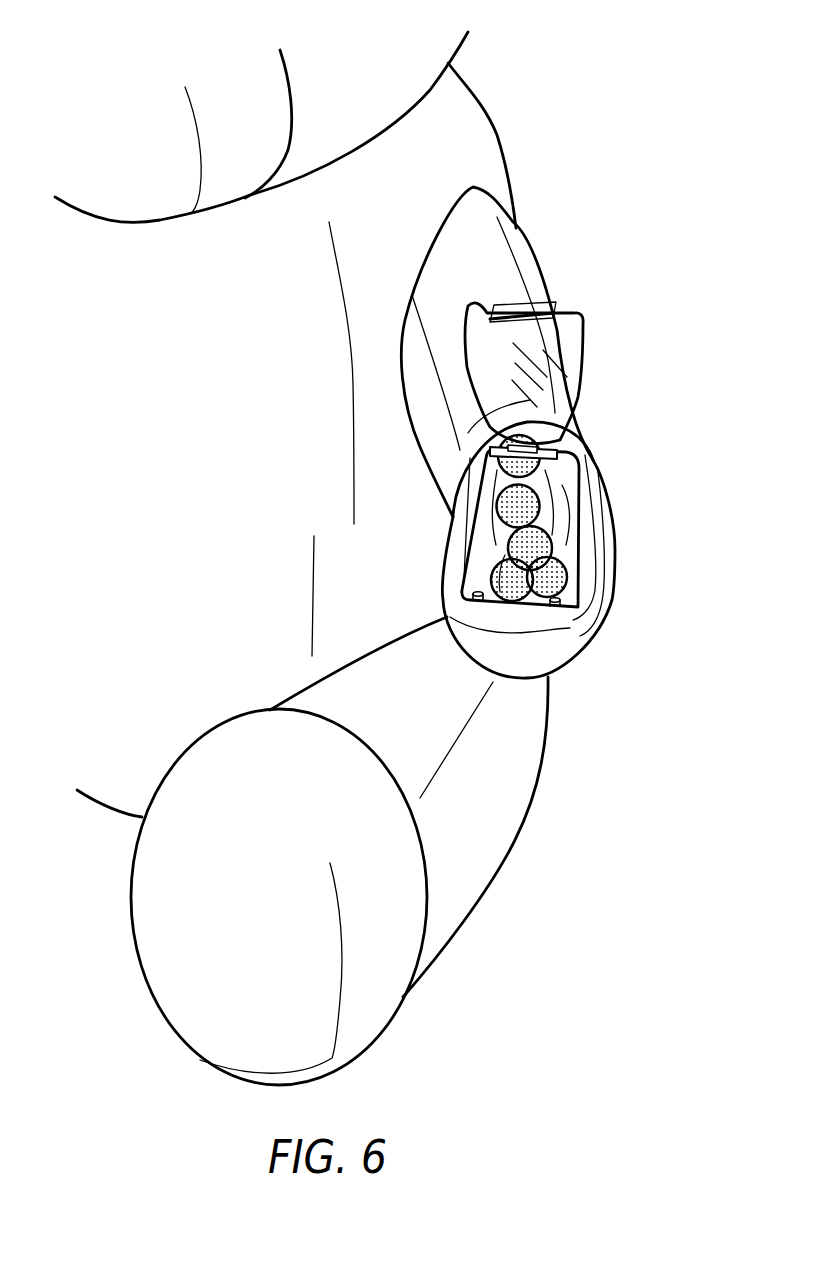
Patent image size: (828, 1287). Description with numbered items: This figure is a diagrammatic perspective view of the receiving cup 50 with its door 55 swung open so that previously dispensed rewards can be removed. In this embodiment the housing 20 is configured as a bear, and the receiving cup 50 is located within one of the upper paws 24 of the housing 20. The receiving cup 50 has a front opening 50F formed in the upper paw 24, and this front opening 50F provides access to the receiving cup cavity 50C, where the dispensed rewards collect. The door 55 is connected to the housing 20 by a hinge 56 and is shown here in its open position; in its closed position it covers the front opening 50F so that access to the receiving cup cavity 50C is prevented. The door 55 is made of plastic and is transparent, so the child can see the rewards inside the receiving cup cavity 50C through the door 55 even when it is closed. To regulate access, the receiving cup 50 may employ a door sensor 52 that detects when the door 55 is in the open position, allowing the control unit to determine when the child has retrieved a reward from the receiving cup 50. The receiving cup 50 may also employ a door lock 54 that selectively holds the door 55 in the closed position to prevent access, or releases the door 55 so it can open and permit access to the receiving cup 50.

The housing 20 is at (500, 148).
The upper paw 24 is at (597, 637).
The door 55 is at (583, 362).
The receiving cup 50 is at (585, 528).
The receiving cup cavity 50C is at (563, 498).
The front opening 50F is at (568, 597).
The door sensor 52 is at (570, 596).
The hinge 56 is at (548, 457).
The door lock 54 is at (487, 600).